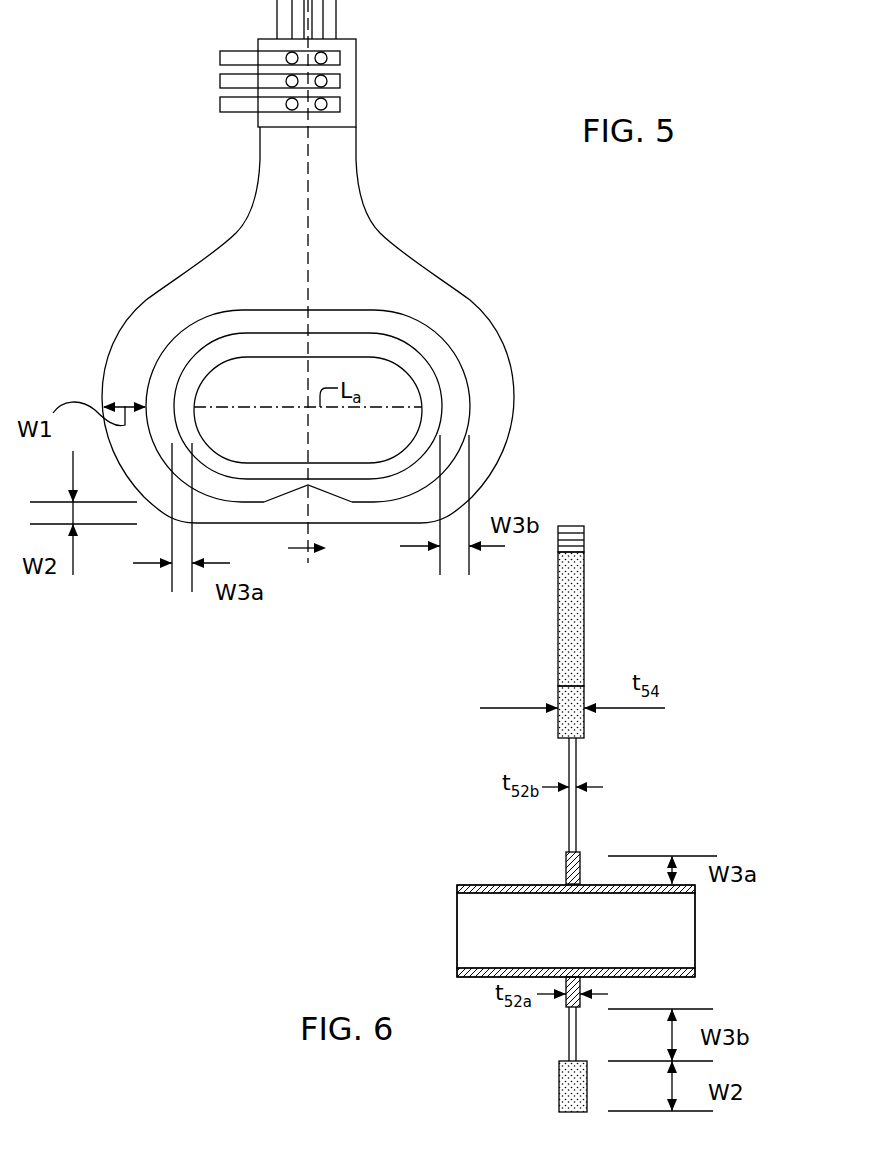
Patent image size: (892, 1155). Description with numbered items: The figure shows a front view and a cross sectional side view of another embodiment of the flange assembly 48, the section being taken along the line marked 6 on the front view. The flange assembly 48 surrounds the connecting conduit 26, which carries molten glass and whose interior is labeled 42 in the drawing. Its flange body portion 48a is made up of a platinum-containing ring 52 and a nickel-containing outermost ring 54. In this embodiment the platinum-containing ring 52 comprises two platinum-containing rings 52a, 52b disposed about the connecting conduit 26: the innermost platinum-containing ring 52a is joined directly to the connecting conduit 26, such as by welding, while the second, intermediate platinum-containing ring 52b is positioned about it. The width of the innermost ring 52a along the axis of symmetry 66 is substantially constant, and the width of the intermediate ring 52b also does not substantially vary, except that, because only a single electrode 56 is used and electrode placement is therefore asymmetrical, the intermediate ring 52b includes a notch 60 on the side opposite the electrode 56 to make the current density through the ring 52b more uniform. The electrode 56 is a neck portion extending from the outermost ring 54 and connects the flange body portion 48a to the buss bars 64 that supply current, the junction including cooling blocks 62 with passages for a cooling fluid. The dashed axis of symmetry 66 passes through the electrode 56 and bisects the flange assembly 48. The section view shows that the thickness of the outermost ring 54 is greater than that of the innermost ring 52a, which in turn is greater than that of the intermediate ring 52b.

In FIG. 5, the connecting conduit 26 is at (389, 348).
In FIG. 6, the connecting conduit 26 is at (457, 886).
In FIG. 5, the sensing element 42 is at (308, 427).
In FIG. 6, the sensing element 42 is at (576, 930).
In FIG. 5, the flange assembly 48 is at (275, 294).
In FIG. 5, the flange body portion 48a is at (96, 337).
In FIG. 5, the platinum-containing ring 52 is at (315, 446).
In FIG. 5, the innermost platinum-containing ring 52a is at (173, 398).
In FIG. 6, the innermost platinum-containing ring 52a is at (566, 866).
In FIG. 5, the second, intermediate platinum-containing ring 52b is at (467, 377).
In FIG. 6, the second, intermediate platinum-containing ring 52b is at (577, 820).
In FIG. 5, the outermost ring 54 is at (442, 263).
In FIG. 6, the outermost ring 54 is at (558, 1085).
In FIG. 5, the electrode 56 is at (260, 160).
In FIG. 6, the electrode 56 is at (585, 598).
In FIG. 5, the notch 60 is at (283, 493).
In FIG. 5, the cooling block 62 is at (357, 78).
In FIG. 5, the buss bar 64 is at (237, 51).
In FIG. 5, the axis of symmetry 66 is at (308, 172).
In FIG. 5, the section line for FIG. 6 is at (319, 549).